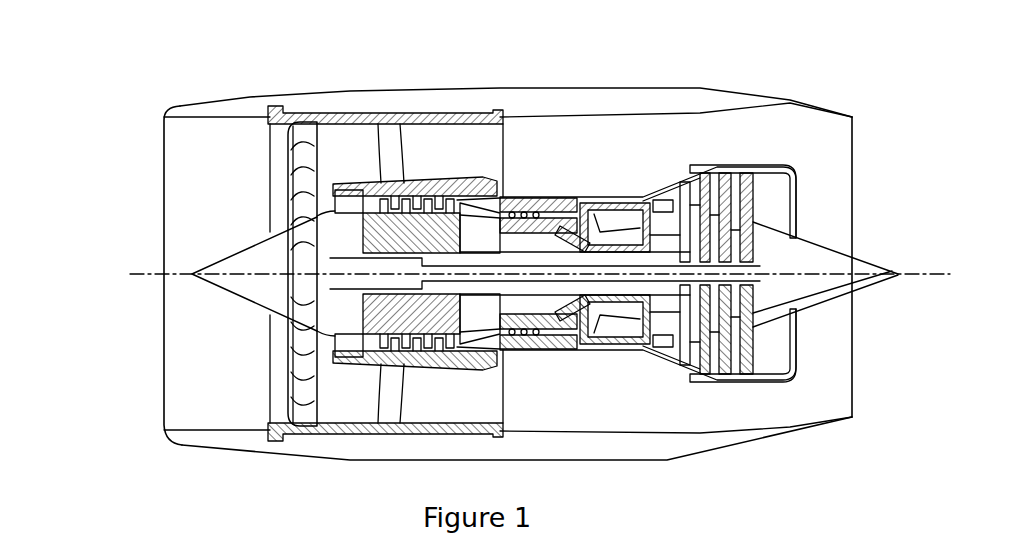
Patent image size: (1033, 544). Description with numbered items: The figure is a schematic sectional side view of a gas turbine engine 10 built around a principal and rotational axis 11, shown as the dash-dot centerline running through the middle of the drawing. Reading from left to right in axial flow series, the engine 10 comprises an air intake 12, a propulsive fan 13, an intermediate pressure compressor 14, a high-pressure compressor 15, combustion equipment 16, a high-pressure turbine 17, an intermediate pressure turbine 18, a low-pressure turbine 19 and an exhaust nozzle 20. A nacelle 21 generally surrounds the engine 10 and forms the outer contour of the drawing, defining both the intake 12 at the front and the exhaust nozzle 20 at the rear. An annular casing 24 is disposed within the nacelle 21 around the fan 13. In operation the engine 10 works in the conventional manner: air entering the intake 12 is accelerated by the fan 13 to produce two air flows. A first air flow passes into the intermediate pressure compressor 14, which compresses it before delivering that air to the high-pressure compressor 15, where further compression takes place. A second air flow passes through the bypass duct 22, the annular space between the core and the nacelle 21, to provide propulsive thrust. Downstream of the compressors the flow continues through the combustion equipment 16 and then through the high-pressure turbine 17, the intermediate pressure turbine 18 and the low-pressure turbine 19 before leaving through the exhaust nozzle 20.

The gas turbine engine 10 is at (143, 158).
The principal and rotational axis 11 is at (160, 274).
The air intake 12 is at (230, 117).
The propulsive fan 13 is at (290, 398).
The intermediate pressure compressor 14 is at (437, 358).
The high-pressure compressor 15 is at (523, 198).
The combustion equipment 16 is at (597, 352).
The high-pressure turbine 17 is at (633, 352).
The intermediate pressure turbine 18 is at (680, 193).
The low-pressure turbine 19 is at (693, 366).
The exhaust nozzle 20 is at (852, 418).
The nacelle 21 is at (643, 88).
The bypass duct 22 is at (447, 161).
The annular casing 24 is at (290, 115).